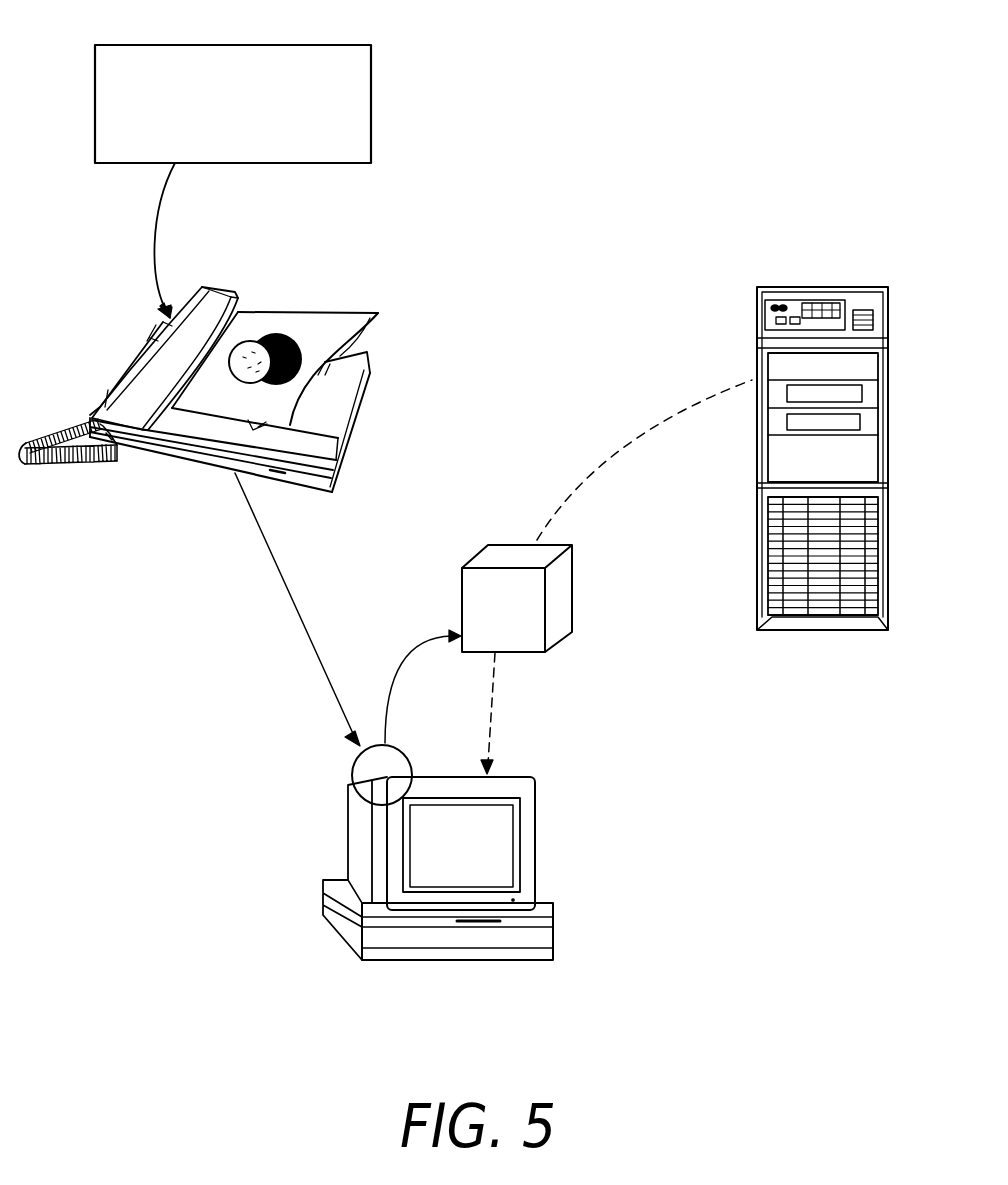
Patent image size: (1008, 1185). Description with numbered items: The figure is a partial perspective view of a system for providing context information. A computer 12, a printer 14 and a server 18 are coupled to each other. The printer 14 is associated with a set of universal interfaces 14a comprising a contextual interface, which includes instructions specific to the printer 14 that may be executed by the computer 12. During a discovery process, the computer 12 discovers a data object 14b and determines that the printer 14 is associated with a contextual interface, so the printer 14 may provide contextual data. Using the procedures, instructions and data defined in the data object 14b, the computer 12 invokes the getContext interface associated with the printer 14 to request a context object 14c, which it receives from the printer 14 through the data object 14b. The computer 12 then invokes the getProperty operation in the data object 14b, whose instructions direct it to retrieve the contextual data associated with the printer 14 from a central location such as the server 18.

The set of universal interfaces 14a is at (310, 45).
The printer 14 is at (367, 392).
The data object 14b is at (353, 752).
The context object 14c is at (572, 618).
The server 18 is at (787, 287).
The computer 12 is at (555, 927).